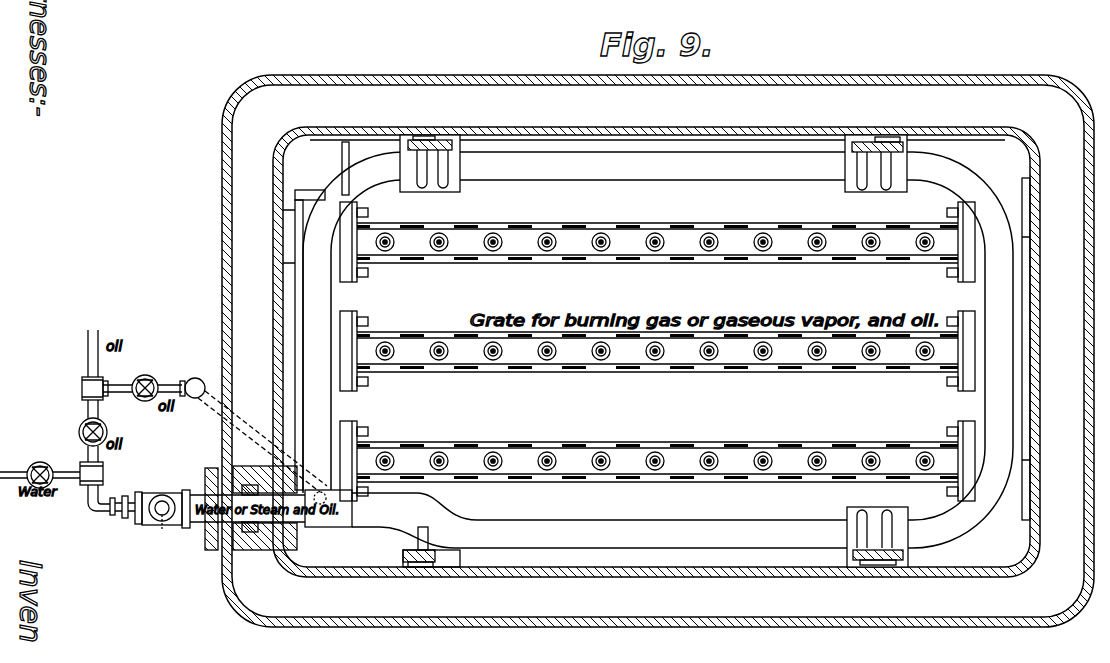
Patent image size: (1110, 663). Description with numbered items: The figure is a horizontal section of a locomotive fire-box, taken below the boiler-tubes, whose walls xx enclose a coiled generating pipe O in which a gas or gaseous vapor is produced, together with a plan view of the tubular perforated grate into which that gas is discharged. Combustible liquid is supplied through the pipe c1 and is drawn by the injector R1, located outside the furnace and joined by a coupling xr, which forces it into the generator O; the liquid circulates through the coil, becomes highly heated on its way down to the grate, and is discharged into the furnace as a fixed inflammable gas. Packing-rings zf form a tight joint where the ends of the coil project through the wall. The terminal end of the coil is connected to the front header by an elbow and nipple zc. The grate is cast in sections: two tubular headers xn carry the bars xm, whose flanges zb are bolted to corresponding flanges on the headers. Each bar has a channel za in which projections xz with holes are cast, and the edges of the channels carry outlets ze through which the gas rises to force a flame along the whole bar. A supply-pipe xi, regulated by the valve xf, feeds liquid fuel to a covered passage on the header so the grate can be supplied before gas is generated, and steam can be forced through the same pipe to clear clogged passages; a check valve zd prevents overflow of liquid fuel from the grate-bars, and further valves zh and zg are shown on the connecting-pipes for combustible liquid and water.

The casing shells xx is at (658, 351).
The generating-coil O is at (658, 353).
The outlets ze is at (657, 343).
The grate-bars xm is at (657, 382).
The channel za is at (824, 476).
The projections xz is at (655, 366).
The flanges zb is at (657, 351).
The headers xn is at (1009, 348).
The check-valve zd is at (312, 340).
The elbow and nipple zc is at (330, 168).
The supply pipe c1 is at (102, 345).
The supply-pipe xi is at (204, 434).
The valve xf is at (145, 376).
The oil valve zh is at (79, 431).
The water valve zg is at (55, 476).
The injector R1 is at (150, 499).
The coupling nut xr is at (161, 521).
The packing-rings zf is at (238, 503).